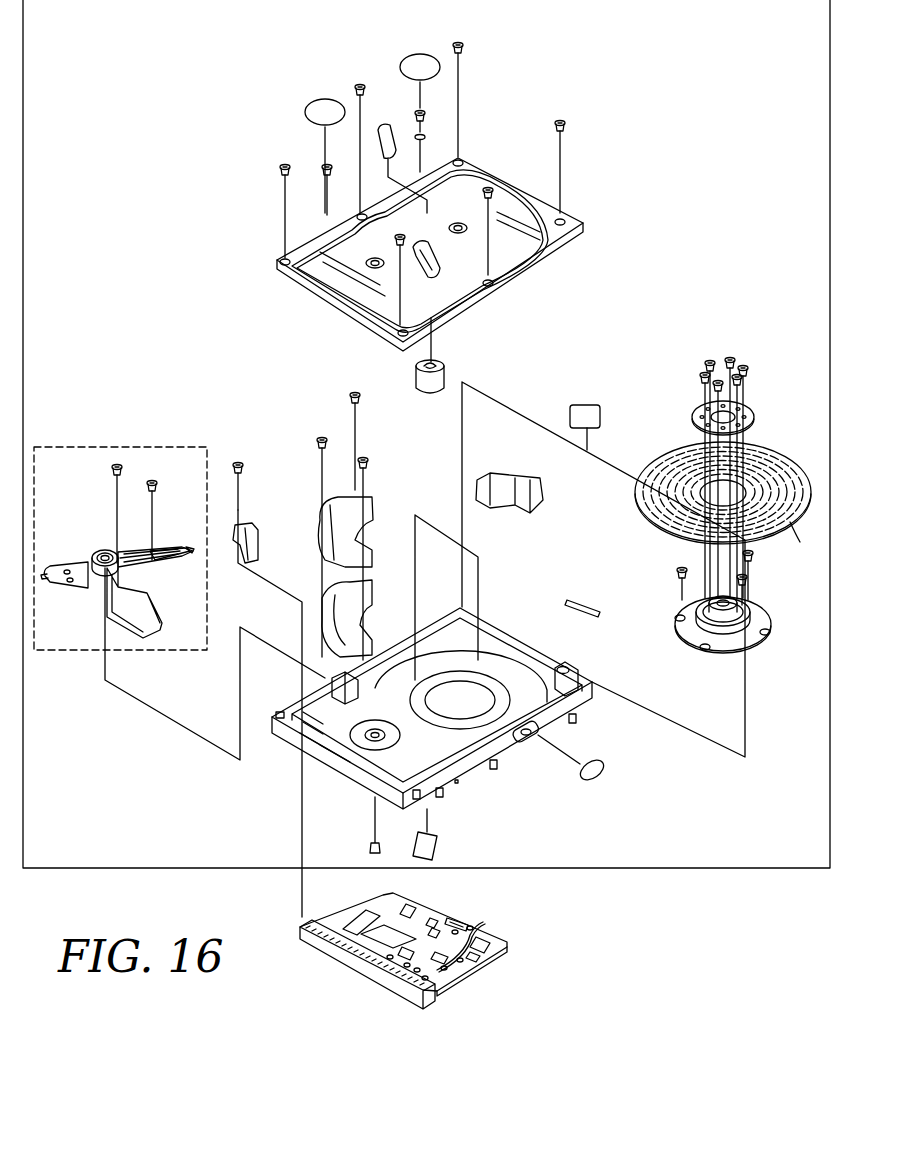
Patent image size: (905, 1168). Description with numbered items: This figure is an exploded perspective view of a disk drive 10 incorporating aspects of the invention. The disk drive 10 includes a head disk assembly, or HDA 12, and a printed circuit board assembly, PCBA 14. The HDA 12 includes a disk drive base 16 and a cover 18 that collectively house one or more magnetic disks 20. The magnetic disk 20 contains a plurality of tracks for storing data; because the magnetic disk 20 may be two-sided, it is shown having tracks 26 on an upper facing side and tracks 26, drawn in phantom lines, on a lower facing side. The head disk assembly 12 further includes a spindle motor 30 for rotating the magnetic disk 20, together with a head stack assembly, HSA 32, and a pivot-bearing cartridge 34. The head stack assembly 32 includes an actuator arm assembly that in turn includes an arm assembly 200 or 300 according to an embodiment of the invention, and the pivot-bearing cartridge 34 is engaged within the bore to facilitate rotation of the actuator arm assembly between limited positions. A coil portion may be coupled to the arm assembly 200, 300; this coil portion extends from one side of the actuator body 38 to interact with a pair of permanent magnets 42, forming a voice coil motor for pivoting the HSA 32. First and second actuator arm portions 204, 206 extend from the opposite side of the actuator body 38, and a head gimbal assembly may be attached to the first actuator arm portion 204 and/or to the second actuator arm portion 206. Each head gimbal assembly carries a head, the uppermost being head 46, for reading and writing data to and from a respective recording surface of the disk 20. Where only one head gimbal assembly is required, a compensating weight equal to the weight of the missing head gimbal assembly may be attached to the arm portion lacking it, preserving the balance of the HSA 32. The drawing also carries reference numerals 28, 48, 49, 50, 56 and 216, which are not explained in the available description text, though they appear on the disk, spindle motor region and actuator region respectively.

The disk drive 10 is at (689, 899).
The HDA 12 is at (580, 870).
The PCBA 14 is at (455, 975).
The disk drive base 16 is at (480, 775).
The cover 18 is at (548, 250).
The magnetic disk 20 is at (706, 509).
The tracks 26 is at (800, 542).
The tracks 28 is at (650, 485).
The spindle motor 30 is at (663, 591).
The HSA 32 is at (120, 528).
The pivot-bearing cartridge 34 is at (108, 556).
The actuator body 38 is at (90, 555).
The permanent magnets 42 is at (318, 528).
The head 46 is at (188, 547).
The spindle motor 48 is at (685, 622).
The spindle hub 49 is at (722, 640).
The motor flange 50 is at (722, 640).
The disc clamp 56 is at (700, 408).
The arm assembly 200 is at (103, 550).
The arm assembly 300 is at (87, 530).
The first actuator arm portion 204 is at (155, 564).
The second actuator arm portion 206 is at (130, 548).
The flex circuit bracket 216 is at (62, 592).